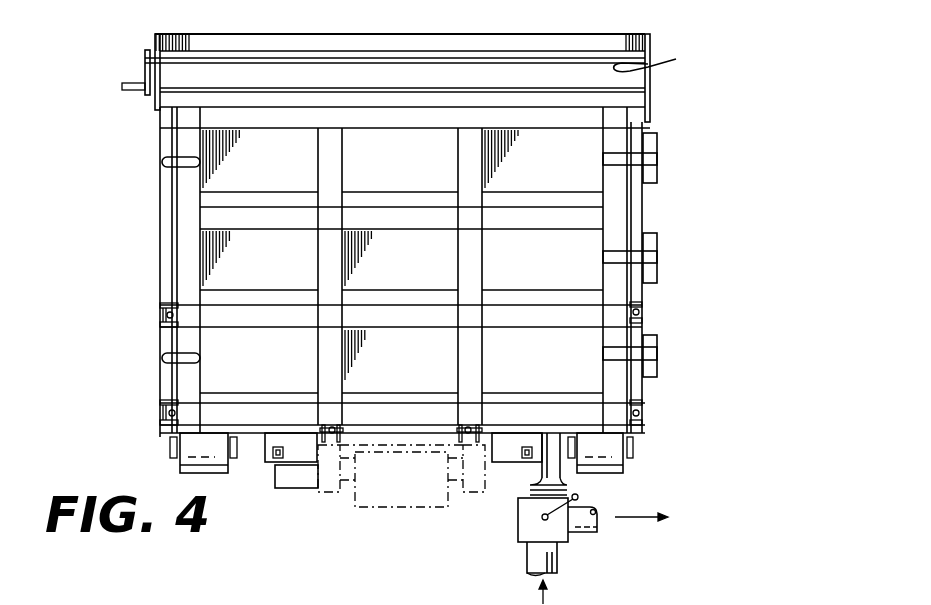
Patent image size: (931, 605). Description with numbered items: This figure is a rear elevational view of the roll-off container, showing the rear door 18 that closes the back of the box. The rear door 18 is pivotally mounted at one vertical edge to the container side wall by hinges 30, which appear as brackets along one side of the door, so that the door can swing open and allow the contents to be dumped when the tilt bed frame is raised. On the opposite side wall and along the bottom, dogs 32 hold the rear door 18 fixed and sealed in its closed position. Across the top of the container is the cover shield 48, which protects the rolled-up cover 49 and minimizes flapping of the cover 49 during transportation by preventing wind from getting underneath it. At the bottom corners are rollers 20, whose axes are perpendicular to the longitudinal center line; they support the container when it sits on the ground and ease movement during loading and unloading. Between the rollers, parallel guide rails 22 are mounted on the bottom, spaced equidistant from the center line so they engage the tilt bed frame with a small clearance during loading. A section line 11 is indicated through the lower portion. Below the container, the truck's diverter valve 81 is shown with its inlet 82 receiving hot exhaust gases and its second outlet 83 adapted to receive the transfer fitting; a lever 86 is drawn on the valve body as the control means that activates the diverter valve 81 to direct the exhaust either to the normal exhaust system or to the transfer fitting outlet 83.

The cover shield 48 is at (648, 34).
The cover 49 is at (663, 58).
The rear door 18 is at (208, 175).
The hinges 30 is at (648, 160).
The dogs 32 is at (160, 310).
The guide rails 22 is at (310, 455).
The section line 11 is at (463, 353).
The rollers 20 is at (222, 475).
The second outlet 83 is at (540, 499).
The lever pin 86 is at (580, 497).
The diverter valve 81 is at (570, 535).
The inlet 82 is at (553, 565).